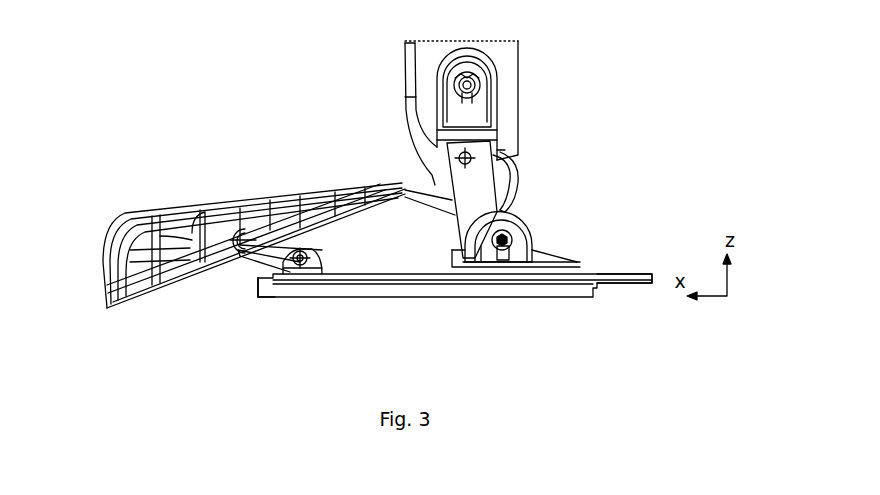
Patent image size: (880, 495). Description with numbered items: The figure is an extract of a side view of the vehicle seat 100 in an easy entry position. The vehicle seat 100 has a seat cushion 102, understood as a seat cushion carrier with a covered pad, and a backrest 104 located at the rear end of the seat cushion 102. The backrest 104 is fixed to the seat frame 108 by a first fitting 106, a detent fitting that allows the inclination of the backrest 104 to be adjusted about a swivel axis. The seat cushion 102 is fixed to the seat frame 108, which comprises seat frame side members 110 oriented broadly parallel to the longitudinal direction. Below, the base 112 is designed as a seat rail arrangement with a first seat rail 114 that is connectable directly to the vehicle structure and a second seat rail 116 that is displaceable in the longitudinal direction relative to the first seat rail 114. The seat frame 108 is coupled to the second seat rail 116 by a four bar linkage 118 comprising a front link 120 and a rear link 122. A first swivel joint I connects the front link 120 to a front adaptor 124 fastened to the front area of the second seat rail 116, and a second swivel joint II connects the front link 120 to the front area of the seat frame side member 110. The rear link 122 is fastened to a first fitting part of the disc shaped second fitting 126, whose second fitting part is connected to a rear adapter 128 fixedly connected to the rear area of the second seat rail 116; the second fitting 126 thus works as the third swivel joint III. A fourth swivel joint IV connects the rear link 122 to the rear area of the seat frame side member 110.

The vehicle seat 100 is at (206, 98).
The seat cushion 102 is at (118, 217).
The backrest 104 is at (505, 56).
The first fitting 106 is at (490, 84).
The seat frame 108 is at (427, 162).
The seat frame side member 110 is at (380, 129).
The base 112 is at (619, 296).
The first seat rail 114 is at (262, 282).
The second seat rail 116 is at (640, 276).
The four bar linkage 118 is at (497, 180).
The front link 120 is at (250, 262).
The rear link 122 is at (480, 163).
The front adaptor 124 is at (323, 262).
The second fitting 126 is at (528, 264).
The rear adapter 128 is at (465, 257).
The first swivel joint I is at (299, 266).
The second swivel joint II is at (232, 227).
The third swivel joint III is at (512, 246).
The fourth swivel joint IV is at (516, 158).